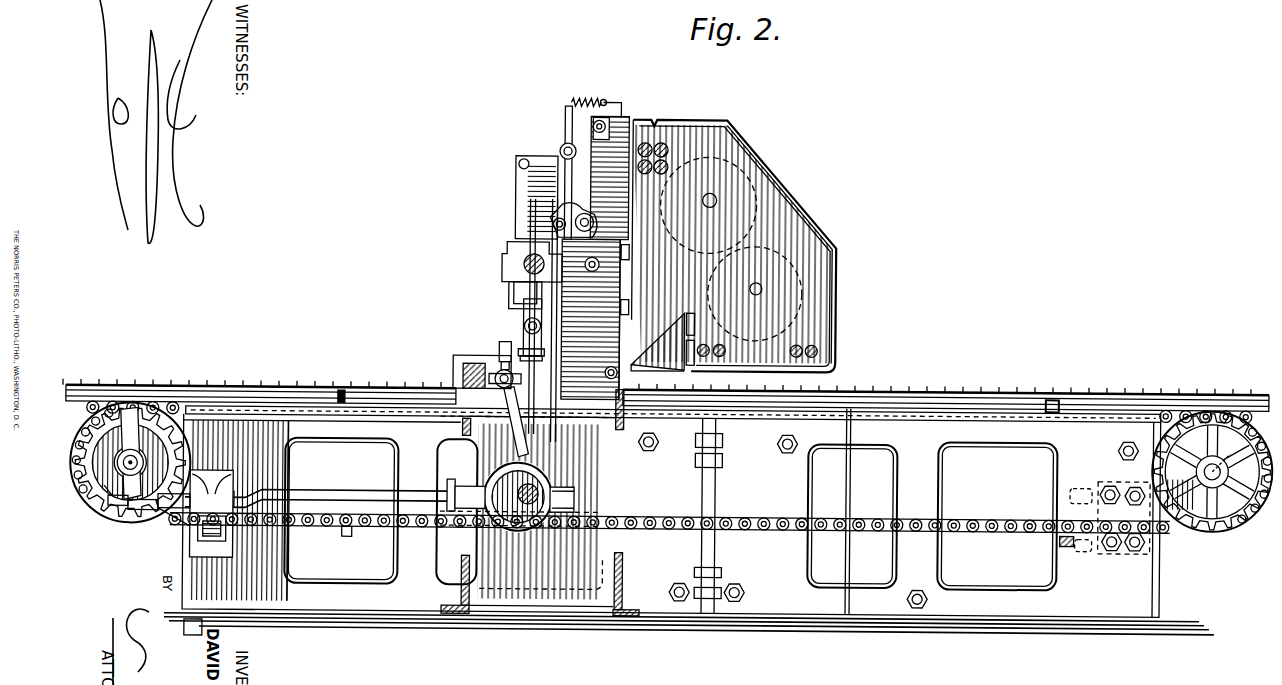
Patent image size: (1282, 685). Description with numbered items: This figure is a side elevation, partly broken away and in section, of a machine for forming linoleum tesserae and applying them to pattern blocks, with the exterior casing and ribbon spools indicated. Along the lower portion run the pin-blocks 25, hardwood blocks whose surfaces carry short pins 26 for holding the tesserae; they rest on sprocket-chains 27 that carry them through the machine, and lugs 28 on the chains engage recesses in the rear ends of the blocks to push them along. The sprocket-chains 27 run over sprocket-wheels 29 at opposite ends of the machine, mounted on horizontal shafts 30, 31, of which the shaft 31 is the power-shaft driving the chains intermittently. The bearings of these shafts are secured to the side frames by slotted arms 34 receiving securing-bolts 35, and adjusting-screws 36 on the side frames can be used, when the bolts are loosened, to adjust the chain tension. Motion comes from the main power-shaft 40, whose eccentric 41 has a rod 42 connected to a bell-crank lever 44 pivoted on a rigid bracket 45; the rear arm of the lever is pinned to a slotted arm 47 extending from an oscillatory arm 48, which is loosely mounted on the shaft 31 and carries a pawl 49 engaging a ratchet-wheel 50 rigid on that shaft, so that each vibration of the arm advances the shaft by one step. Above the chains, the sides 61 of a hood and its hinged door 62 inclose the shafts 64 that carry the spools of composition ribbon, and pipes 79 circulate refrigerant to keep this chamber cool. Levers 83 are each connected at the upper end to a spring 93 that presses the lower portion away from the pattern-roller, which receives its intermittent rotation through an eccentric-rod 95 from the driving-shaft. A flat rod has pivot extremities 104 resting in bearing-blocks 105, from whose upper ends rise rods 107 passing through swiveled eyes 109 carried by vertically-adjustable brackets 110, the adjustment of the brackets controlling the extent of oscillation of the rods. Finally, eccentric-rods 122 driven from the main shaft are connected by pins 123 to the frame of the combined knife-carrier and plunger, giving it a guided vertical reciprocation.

The pin-blocks 25 is at (247, 388).
The short pins 26 is at (178, 385).
The sprocket-chains 27 is at (912, 404).
The lugs 28 is at (341, 392).
The sprocket-wheels 29 is at (1220, 500).
The horizontal shaft 30 is at (1238, 448).
The power-shaft 31 is at (108, 510).
The arms 34 is at (1126, 460).
The securing-bolts 35 is at (1127, 556).
The adjusting-screws 36 is at (1076, 548).
The main power-shaft 40 is at (538, 522).
The eccentric 41 is at (478, 520).
The eccentric-rod 42 is at (335, 486).
The bell-crank lever 44 is at (182, 516).
The rigid bracket 45 is at (211, 513).
The slotted arm 47 is at (150, 515).
The oscillatory arm 48 is at (118, 512).
The pawl 49 is at (118, 405).
The ratchet-wheel 50 is at (82, 500).
The sides of inclosing frame 61 is at (805, 238).
The hinged door 62 is at (836, 273).
The shafts 64 is at (714, 200).
The pipes 79 is at (660, 145).
The levers 83 is at (561, 124).
The spring 93 is at (582, 103).
The eccentric-rod 95 is at (556, 339).
The pivot extremities 104 is at (523, 328).
The bearing-blocks 105 is at (520, 310).
The rods 107 is at (545, 222).
The swiveled eyes 109 is at (520, 268).
The vertically-adjustable brackets 110 is at (500, 258).
The eccentric-rods 122 is at (458, 386).
The pins 123 is at (495, 378).